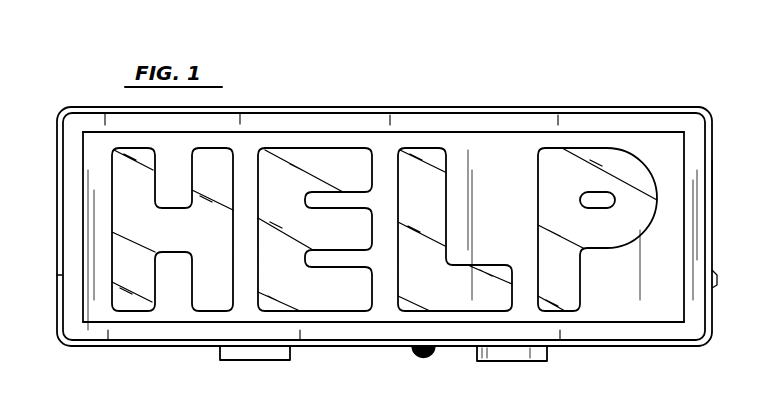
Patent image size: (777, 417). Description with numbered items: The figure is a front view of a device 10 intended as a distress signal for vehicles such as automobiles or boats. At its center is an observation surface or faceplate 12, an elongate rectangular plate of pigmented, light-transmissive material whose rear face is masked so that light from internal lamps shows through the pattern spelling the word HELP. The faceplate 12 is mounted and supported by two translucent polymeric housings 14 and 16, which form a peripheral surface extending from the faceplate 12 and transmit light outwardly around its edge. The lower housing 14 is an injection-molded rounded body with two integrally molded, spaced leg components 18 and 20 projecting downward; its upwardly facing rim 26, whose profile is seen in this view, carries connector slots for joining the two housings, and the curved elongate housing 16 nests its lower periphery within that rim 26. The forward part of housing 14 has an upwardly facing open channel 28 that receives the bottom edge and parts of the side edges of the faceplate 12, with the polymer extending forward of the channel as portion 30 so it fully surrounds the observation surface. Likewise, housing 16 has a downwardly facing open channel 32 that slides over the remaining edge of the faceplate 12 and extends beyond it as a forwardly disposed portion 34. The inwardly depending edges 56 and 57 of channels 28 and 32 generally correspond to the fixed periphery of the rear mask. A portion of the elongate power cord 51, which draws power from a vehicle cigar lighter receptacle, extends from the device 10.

The device 10 is at (617, 28).
The faceplate 12 is at (665, 153).
The housing 14 is at (710, 316).
The housing 16 is at (712, 173).
The leg component 18 is at (513, 350).
The leg component 20 is at (265, 350).
The rim 26 is at (83, 278).
The open channel 28 is at (700, 336).
The forwardly extending portion 30 is at (628, 348).
The open channel 32 is at (492, 122).
The forwardly disposed portion 34 is at (647, 108).
The cord 51 is at (426, 355).
The inwardly depending edge 56 is at (378, 330).
The inwardly depending edge 57 is at (377, 132).